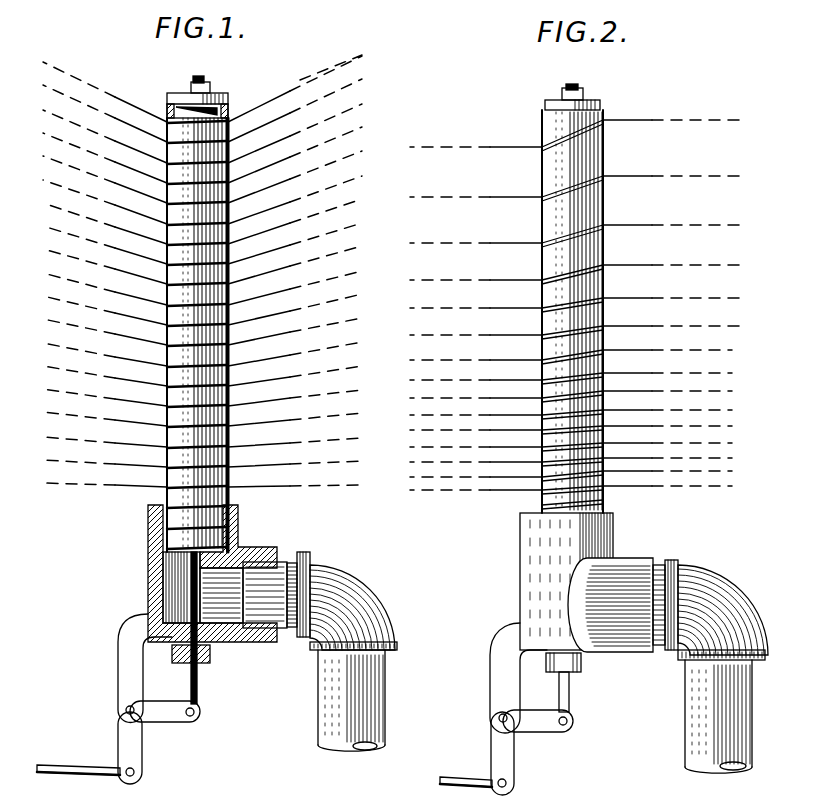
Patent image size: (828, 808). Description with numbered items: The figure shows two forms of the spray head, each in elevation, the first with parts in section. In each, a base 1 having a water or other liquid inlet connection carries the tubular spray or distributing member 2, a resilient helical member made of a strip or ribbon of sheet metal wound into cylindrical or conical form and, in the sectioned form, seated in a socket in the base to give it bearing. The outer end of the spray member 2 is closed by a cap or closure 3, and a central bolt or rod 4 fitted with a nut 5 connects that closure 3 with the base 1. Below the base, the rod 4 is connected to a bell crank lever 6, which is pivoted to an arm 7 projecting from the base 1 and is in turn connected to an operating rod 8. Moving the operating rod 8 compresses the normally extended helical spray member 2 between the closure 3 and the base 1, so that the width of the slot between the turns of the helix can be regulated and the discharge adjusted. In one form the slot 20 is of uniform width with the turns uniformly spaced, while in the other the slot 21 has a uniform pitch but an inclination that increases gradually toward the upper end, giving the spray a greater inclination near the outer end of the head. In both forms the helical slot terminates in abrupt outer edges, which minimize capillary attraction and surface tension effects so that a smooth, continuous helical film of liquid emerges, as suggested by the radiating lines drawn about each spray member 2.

In FIG. 1, the base 1 is at (148, 568).
In FIG. 2, the base 1 is at (535, 563).
In FIG. 1, the tubular spray member 2 is at (172, 297).
In FIG. 2, the tubular spray member 2 is at (547, 222).
In FIG. 1, the cap or closure 3 is at (180, 93).
In FIG. 2, the cap or closure 3 is at (600, 100).
In FIG. 1, the central bolt or rod 4 is at (200, 78).
In FIG. 2, the central bolt or rod 4 is at (574, 88).
In FIG. 1, the nut 5 is at (210, 89).
In FIG. 2, the nut 5 is at (583, 93).
In FIG. 1, the bell crank lever 6 is at (133, 747).
In FIG. 2, the bell crank lever 6 is at (548, 725).
In FIG. 1, the arm 7 is at (128, 673).
In FIG. 2, the arm 7 is at (497, 691).
In FIG. 1, the operating rod 8 is at (70, 767).
In FIG. 2, the operating rod 8 is at (455, 778).
In FIG. 2, the slot 20 is at (600, 223).
In FIG. 1, the slot 21 is at (230, 163).